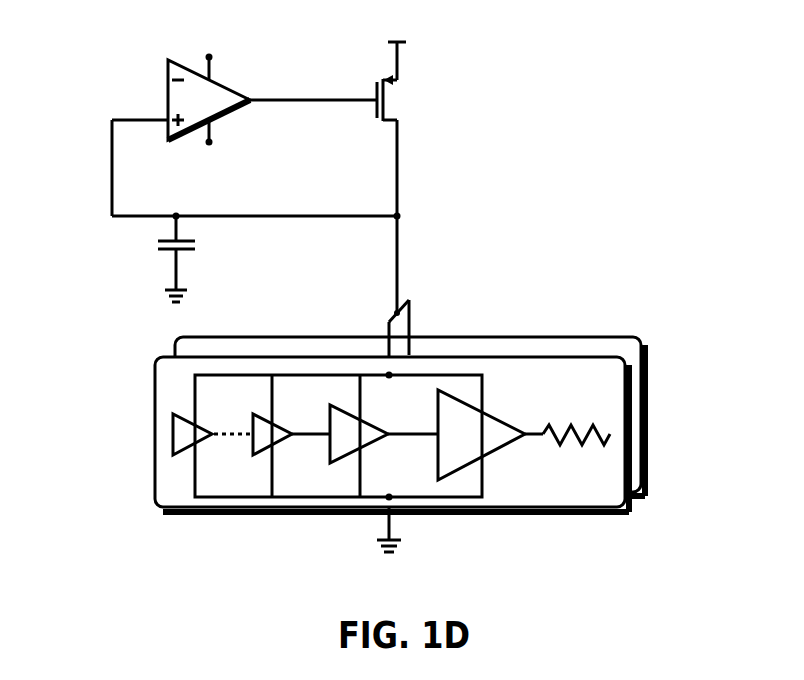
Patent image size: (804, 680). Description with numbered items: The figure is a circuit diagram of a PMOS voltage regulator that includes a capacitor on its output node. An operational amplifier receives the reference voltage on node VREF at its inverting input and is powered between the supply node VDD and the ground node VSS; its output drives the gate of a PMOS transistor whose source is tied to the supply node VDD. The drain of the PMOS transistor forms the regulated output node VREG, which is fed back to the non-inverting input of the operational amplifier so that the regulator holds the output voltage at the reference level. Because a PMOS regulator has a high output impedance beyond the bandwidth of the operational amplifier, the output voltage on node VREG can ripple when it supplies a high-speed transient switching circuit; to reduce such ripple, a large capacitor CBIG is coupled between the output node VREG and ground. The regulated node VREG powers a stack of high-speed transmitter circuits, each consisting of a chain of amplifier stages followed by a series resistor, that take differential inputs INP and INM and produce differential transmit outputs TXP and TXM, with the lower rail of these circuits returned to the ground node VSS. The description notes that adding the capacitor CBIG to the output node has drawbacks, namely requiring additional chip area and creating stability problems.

The reference voltage node VREF is at (168, 80).
The supply voltage node VDD is at (327, 52).
The ground supply node VSS is at (320, 336).
The output node VREG is at (291, 173).
The capacitor CBIG is at (144, 258).
The positive input INP is at (173, 434).
The negative input INM is at (155, 414).
The positive transmit output TXP is at (610, 434).
The negative transmit output TXM is at (625, 414).